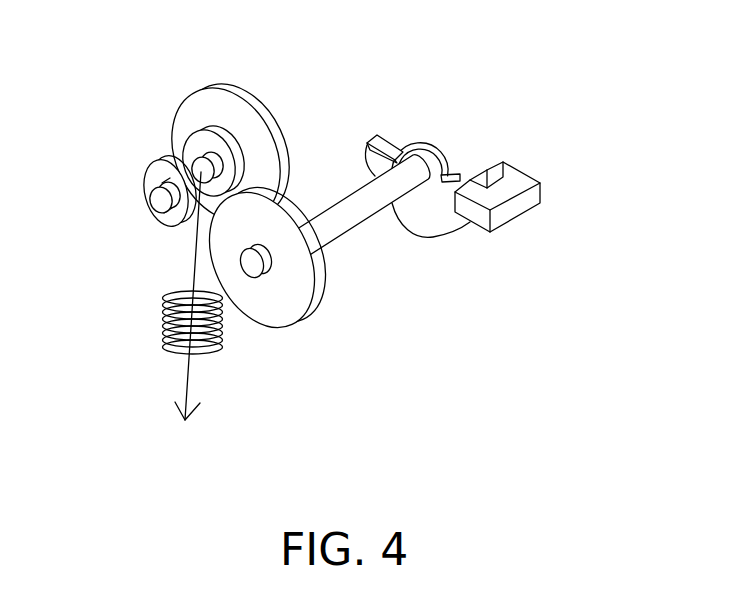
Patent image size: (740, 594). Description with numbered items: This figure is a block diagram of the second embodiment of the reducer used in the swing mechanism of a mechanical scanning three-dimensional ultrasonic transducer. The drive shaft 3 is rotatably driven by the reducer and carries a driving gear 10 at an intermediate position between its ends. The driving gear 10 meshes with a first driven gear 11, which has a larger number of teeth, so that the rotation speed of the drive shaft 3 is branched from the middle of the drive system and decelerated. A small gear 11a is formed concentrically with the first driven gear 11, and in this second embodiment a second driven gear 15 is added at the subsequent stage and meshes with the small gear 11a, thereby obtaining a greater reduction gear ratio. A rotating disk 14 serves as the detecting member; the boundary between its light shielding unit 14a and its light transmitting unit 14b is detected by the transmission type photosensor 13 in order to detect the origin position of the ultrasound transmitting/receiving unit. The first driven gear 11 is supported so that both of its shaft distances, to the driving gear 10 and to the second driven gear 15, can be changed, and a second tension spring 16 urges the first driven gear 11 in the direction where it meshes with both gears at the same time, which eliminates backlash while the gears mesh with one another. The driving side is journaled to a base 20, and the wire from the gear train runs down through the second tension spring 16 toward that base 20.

The drive shaft 3 is at (162, 207).
The driving gear 10 is at (165, 158).
The first driven gear 11 is at (218, 92).
The small gear 11a is at (235, 153).
The transmission type photosensor 13 is at (523, 208).
The rotating disk 14 is at (440, 226).
The light shielding unit 14a is at (417, 220).
The light transmitting unit 14b is at (385, 143).
The second driven gear 15 is at (318, 292).
The second tension spring 16 is at (223, 350).
The base 20 is at (185, 420).